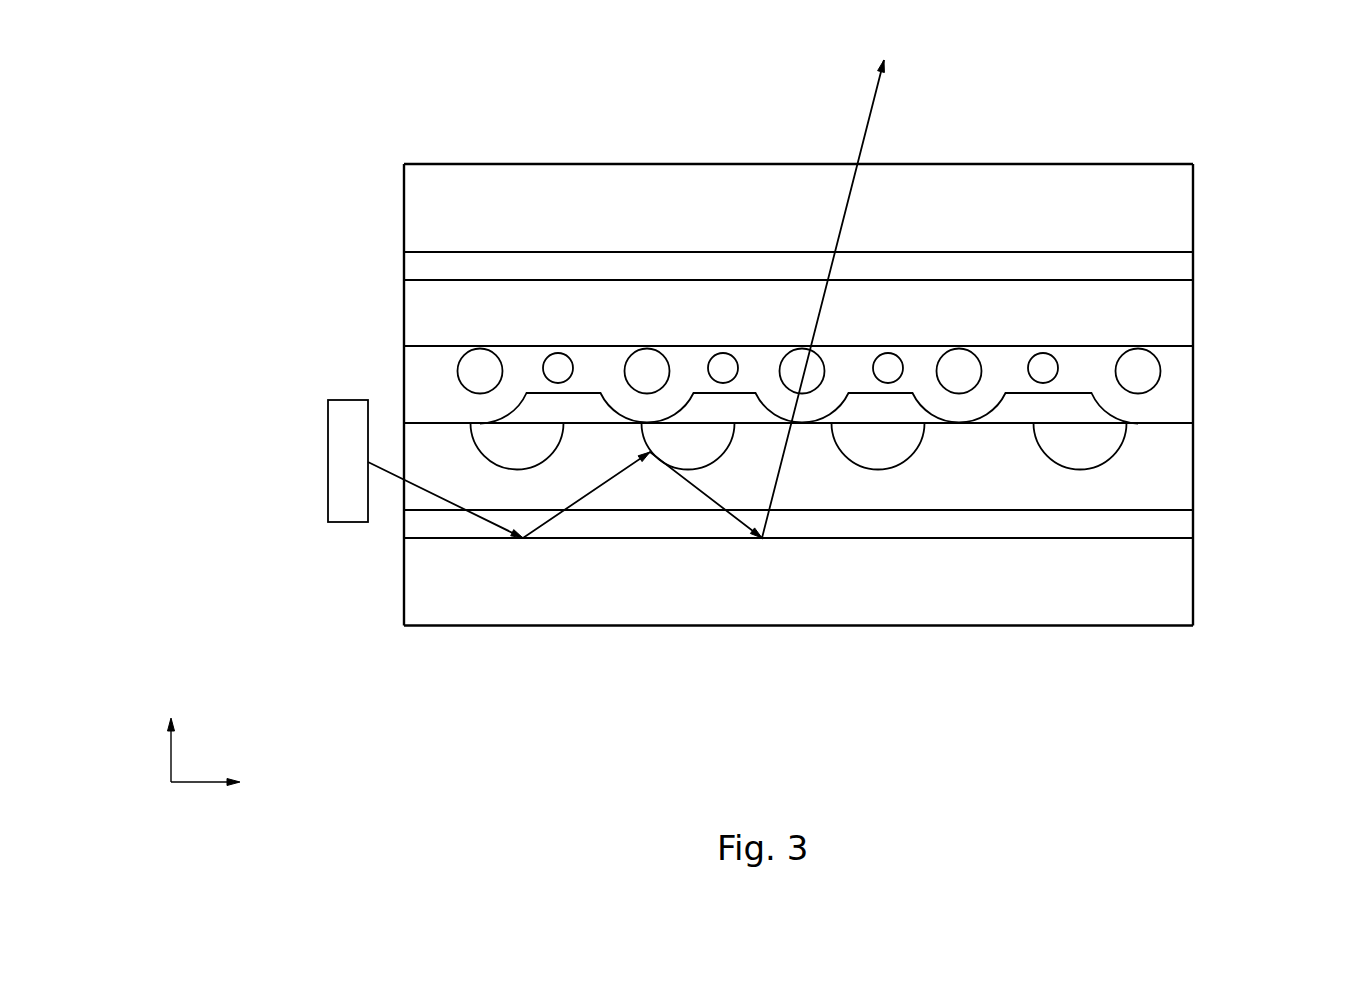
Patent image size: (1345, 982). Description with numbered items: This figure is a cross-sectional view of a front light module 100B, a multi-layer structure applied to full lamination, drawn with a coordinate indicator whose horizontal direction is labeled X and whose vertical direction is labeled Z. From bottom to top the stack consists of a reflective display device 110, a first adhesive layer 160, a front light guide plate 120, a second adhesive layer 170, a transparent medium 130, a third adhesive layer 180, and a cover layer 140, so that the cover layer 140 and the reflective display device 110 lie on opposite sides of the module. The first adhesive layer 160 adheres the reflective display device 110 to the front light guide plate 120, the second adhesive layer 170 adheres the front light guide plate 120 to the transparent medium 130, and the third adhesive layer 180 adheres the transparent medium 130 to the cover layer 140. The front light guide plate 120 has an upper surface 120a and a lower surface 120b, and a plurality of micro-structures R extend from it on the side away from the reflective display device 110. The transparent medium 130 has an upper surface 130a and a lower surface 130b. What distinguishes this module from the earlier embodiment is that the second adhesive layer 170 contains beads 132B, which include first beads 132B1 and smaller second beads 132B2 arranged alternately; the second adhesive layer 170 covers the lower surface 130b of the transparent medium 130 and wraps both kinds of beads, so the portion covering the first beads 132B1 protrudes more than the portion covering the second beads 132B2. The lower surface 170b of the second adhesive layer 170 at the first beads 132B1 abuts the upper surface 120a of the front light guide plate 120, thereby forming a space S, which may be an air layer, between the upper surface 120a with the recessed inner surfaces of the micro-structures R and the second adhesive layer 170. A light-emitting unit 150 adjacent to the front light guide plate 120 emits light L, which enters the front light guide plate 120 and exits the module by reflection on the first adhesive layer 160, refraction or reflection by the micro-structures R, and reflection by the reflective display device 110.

The front light module 100B is at (279, 82).
The reflective display device 110 is at (1178, 580).
The front light guide plate 120 is at (842, 573).
The upper surface 120a is at (622, 427).
The lower surface 120b is at (965, 510).
The transparent medium 130 is at (843, 211).
The upper surface 130a is at (932, 278).
The lower surface 130b is at (1015, 345).
The beads 132B is at (688, 225).
The first beads 132B1 is at (480, 360).
The second beads 132B2 is at (558, 362).
The cover layer 140 is at (1180, 210).
The light-emitting unit 150 is at (335, 460).
The first adhesive layer 160 is at (1178, 523).
The second adhesive layer 170 is at (894, 528).
The lower surface 170b is at (602, 423).
The third adhesive layer 180 is at (1180, 265).
The light L is at (437, 503).
The space S is at (497, 432).
The micro-structures R is at (535, 472).
The Z axis Z is at (170, 733).
The X axis X is at (218, 787).